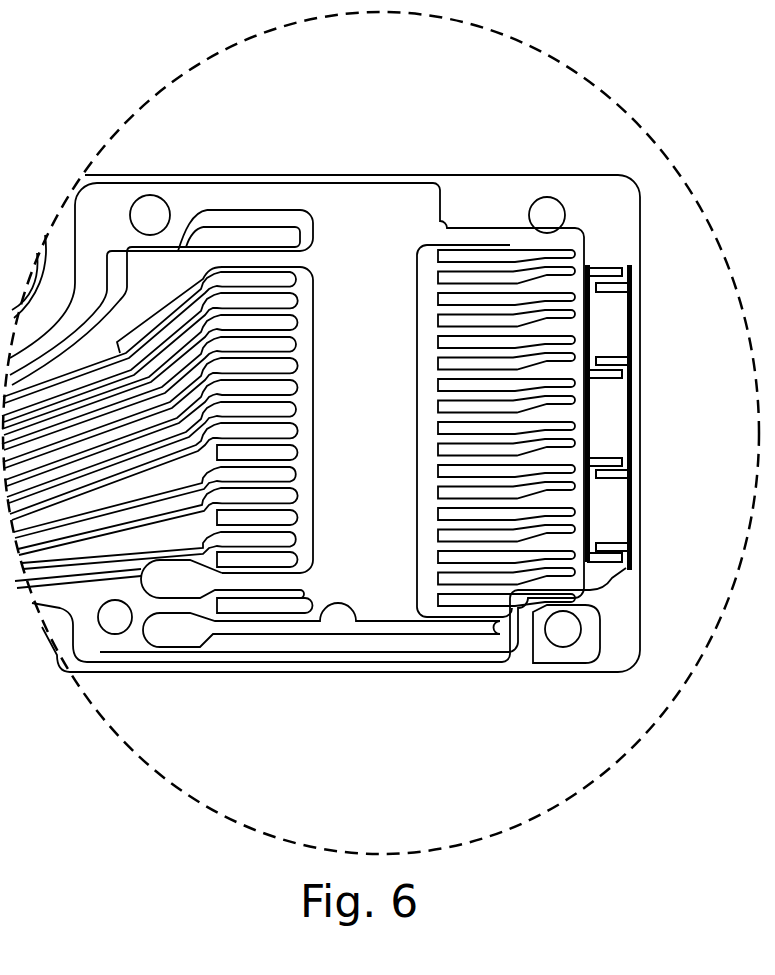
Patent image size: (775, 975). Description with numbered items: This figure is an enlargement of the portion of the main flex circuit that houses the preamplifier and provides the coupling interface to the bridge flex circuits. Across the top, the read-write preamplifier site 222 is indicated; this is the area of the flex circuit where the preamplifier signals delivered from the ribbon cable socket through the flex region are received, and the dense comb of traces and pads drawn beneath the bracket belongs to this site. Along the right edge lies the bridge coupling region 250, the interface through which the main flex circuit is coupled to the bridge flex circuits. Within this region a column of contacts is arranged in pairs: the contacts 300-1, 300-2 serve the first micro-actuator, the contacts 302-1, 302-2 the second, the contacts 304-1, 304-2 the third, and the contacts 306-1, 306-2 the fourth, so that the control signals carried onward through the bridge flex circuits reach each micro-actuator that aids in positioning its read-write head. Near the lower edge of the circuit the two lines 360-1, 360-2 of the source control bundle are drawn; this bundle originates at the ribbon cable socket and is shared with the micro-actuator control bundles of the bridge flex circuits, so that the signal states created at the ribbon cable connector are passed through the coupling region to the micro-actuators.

The read-write preamplifier site 222 is at (507, 148).
The bridge coupling region 250 is at (632, 231).
The first micro-actuator coupling contact 300-1 is at (606, 270).
The first micro-actuator coupling contact 300-2 is at (610, 292).
The second micro-actuator coupling contact 302-1 is at (612, 374).
The second micro-actuator coupling contact 302-2 is at (610, 360).
The third micro-actuator coupling contact 304-1 is at (603, 462).
The third micro-actuator coupling contact 304-2 is at (608, 480).
The fourth micro-actuator coupling contact 306-1 is at (603, 563).
The fourth micro-actuator coupling contact 306-2 is at (607, 545).
The source control bundle line 360-1 is at (132, 653).
The source control bundle line 360-2 is at (468, 664).